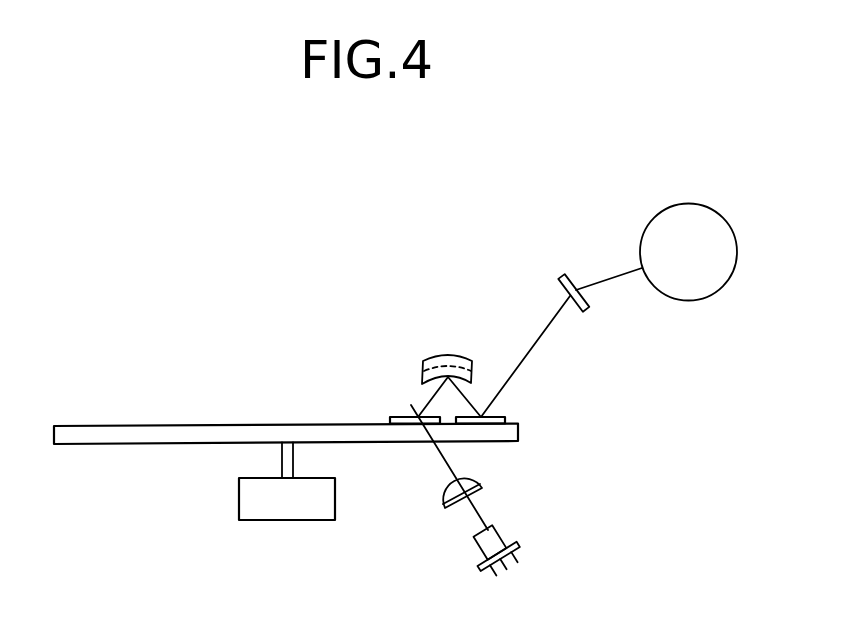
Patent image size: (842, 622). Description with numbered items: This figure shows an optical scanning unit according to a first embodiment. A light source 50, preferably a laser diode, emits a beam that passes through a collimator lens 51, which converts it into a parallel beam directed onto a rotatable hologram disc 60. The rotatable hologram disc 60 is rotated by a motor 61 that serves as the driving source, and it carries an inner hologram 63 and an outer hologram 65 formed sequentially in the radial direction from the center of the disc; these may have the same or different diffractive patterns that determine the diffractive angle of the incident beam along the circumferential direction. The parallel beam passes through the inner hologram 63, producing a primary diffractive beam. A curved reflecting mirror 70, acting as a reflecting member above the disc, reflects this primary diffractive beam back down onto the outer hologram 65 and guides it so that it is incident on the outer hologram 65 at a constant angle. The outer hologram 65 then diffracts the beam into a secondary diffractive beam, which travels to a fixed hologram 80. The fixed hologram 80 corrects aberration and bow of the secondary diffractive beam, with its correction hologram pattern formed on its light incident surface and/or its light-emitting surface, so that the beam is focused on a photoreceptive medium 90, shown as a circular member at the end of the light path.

The light source 50 is at (488, 538).
The collimator lens 51 is at (482, 488).
The rotatable hologram disc 60 is at (80, 434).
The motor 61 is at (250, 501).
The inner hologram 63 is at (396, 418).
The outer hologram 65 is at (503, 418).
The curved reflecting mirror 70 is at (437, 360).
The fixed hologram 80 is at (563, 277).
The photoreceptive medium 90 is at (662, 222).